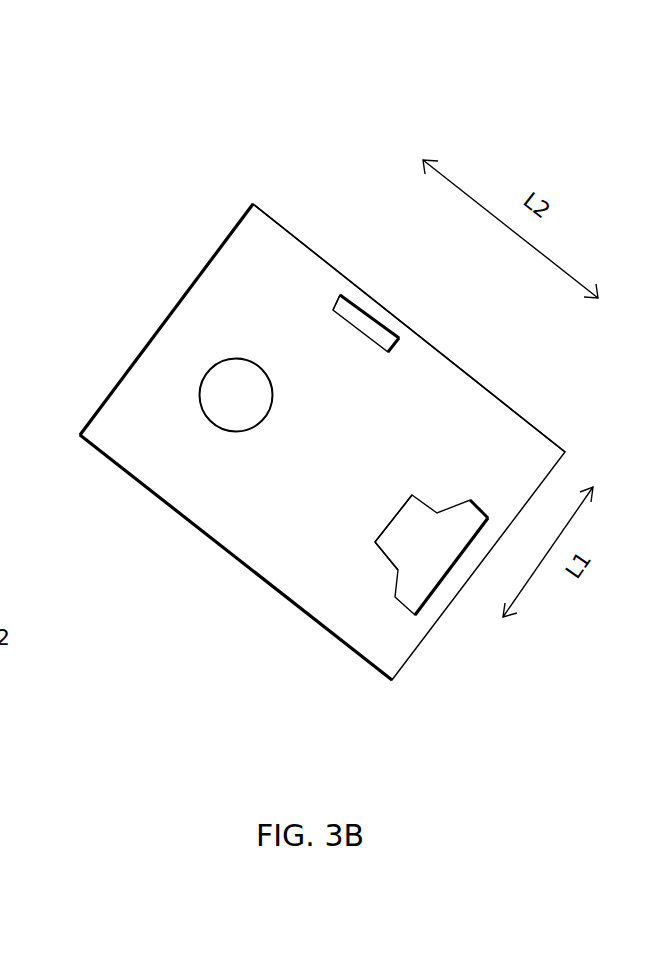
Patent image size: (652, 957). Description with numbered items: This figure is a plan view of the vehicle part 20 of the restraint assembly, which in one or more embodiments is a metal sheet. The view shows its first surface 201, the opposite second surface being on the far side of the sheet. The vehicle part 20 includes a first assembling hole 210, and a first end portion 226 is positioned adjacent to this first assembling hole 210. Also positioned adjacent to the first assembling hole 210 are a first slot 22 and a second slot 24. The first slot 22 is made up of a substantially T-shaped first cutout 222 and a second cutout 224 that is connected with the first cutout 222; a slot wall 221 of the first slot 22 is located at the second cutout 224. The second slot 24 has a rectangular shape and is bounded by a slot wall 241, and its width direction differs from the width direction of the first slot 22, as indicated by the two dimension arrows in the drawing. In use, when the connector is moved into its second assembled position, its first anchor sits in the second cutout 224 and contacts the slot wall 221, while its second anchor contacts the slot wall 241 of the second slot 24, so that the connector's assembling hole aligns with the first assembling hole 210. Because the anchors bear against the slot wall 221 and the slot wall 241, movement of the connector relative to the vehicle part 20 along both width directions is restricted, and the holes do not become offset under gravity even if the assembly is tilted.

The vehicle part 20 is at (318, 208).
The first end portion 226 is at (188, 290).
The first assembling hole 210 is at (238, 382).
The first surface 201 is at (433, 400).
The second slot 24 is at (384, 318).
The slot wall 241 is at (339, 304).
The first slot 22 is at (492, 515).
The slot wall 221 is at (402, 513).
The second cutout 224 is at (398, 530).
The first cutout 222 is at (432, 575).